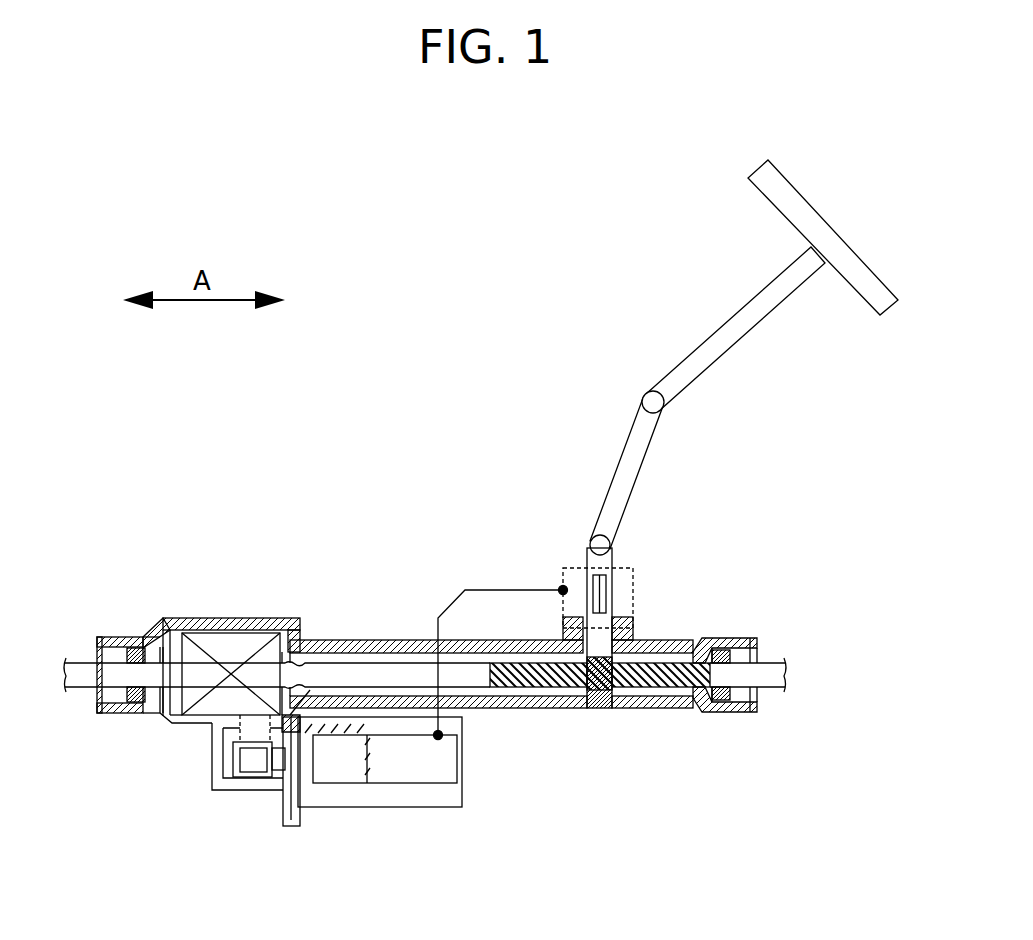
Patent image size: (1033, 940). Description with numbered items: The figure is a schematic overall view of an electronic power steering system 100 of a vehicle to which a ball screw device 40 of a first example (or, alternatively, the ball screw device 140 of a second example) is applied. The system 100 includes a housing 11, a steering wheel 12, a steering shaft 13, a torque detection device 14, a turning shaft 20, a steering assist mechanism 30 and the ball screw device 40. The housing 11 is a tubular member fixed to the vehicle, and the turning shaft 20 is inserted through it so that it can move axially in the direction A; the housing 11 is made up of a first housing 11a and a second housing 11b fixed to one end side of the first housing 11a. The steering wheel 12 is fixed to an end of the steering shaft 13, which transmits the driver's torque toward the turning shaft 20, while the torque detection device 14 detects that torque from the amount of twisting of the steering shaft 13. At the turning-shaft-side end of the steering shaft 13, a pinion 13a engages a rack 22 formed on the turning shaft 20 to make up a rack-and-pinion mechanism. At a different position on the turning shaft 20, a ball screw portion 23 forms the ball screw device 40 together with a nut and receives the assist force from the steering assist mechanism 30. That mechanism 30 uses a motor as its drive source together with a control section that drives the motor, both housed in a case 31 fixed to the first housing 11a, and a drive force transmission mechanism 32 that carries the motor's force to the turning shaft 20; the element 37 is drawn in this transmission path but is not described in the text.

The steering system 100 is at (343, 460).
The steering wheel 12 is at (808, 202).
The steering shaft 13 is at (673, 529).
The pinion 13a is at (598, 690).
The torque detection device 14 is at (637, 592).
The housing 11 is at (427, 594).
The first housing 11a is at (393, 642).
The second housing 11b is at (282, 618).
The turning shaft 20 is at (354, 645).
The rack 22 is at (562, 675).
The ball screw portion 23 is at (304, 670).
The steering assist mechanism 30 is at (236, 784).
The case 31 is at (398, 808).
The drive force transmission mechanism 32 is at (234, 729).
The speed reducer 37 is at (273, 780).
The ball screw device 40 is at (190, 611).
The ball screw device 140 is at (213, 636).